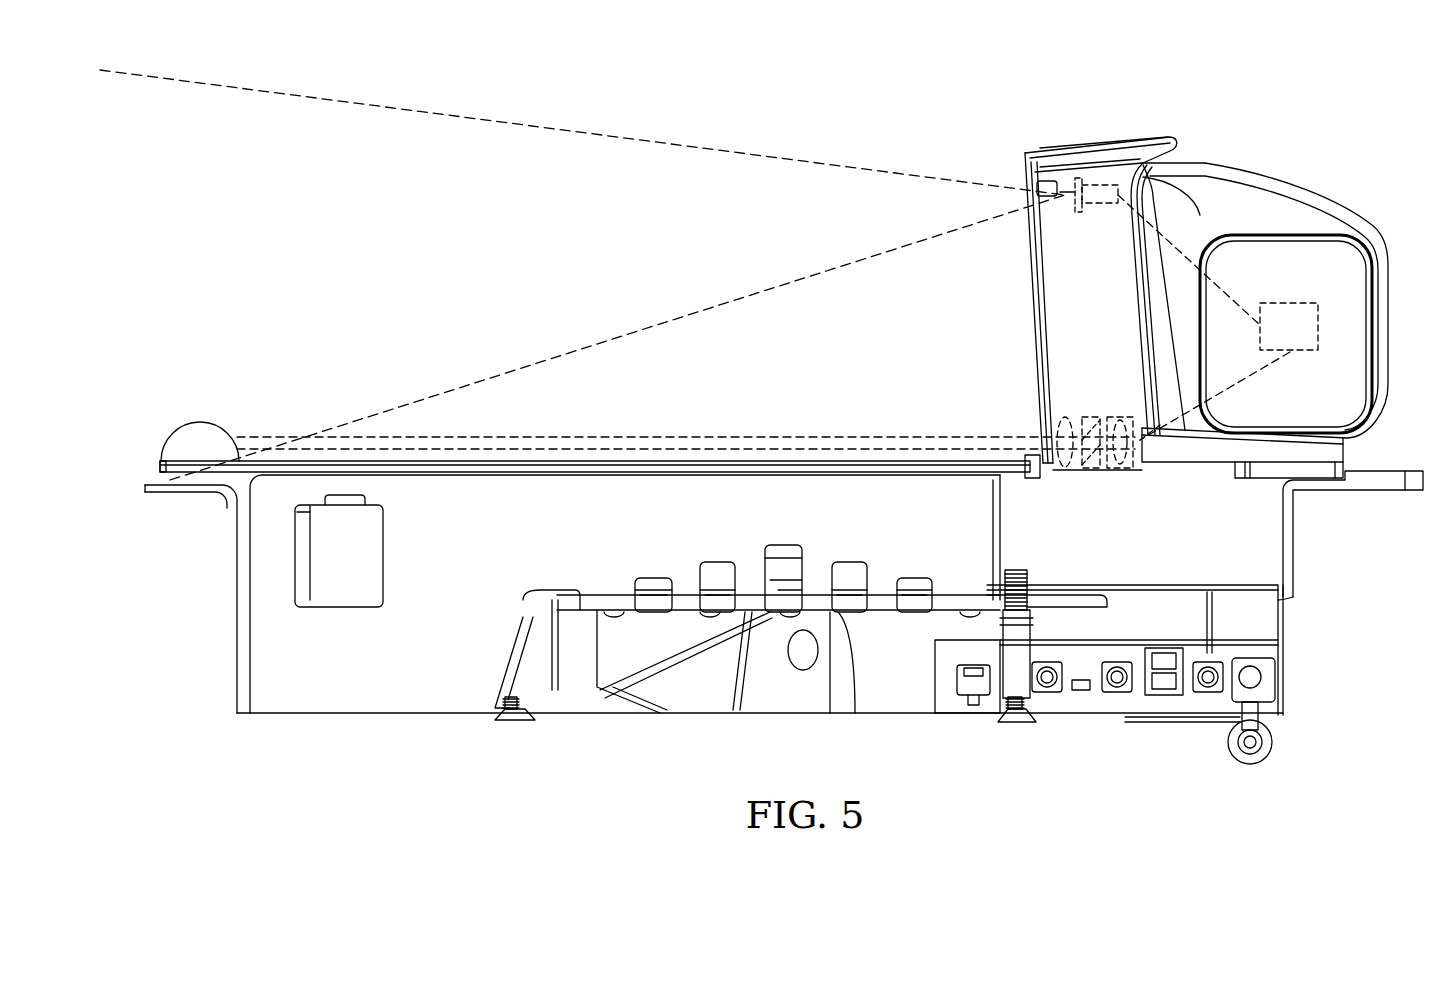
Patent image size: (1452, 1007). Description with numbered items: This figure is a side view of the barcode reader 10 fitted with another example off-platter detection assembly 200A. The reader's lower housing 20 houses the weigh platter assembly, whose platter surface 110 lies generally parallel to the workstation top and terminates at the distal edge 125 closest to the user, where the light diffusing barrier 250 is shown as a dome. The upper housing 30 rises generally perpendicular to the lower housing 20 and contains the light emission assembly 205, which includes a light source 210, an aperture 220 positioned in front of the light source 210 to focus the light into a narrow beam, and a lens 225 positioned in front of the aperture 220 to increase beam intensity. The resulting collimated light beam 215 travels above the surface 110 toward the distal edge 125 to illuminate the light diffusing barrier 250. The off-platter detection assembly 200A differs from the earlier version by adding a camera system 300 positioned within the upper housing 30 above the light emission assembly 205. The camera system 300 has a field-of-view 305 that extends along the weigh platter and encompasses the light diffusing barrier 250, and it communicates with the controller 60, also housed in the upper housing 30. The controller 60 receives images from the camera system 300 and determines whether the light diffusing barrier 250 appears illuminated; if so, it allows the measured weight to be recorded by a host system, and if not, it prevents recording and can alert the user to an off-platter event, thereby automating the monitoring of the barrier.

The barcode reader 10 is at (882, 142).
The lower housing 20 is at (226, 605).
The upper housing 30 is at (1112, 122).
The controller 60 is at (1290, 303).
The surface 110 is at (535, 461).
The distal edge 125 is at (160, 467).
The off-platter detection assembly 200A is at (1008, 405).
The light emission assembly 205 is at (1155, 472).
The light source 210 is at (1133, 469).
The collimated light beam 215 is at (715, 447).
The aperture 220 is at (1103, 469).
The lens 225 is at (1065, 468).
The light diffusing barrier 250 is at (205, 445).
The camera system 300 is at (1095, 212).
The field-of-view 305 is at (588, 132).